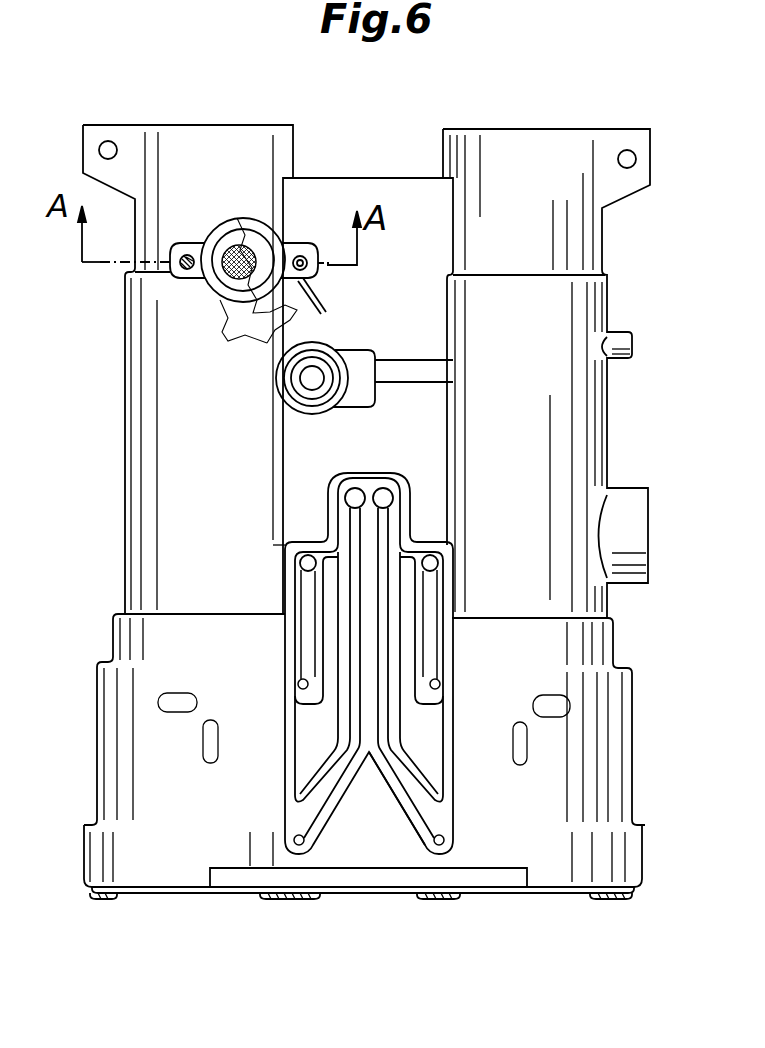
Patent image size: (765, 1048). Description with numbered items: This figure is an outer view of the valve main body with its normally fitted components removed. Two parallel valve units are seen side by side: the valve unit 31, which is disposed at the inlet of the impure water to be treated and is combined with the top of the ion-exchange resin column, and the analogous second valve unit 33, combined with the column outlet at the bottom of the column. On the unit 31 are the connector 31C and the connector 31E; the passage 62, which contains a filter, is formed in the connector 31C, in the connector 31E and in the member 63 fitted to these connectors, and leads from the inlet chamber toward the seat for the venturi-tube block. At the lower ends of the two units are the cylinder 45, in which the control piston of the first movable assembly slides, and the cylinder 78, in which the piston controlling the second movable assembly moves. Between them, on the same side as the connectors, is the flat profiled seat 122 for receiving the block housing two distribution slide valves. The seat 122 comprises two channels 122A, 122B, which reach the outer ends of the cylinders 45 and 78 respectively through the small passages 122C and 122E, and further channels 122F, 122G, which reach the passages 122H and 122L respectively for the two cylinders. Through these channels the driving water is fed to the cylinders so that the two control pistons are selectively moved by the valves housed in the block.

The valve unit 31 is at (125, 433).
The connector 31C is at (222, 222).
The connector 31E is at (278, 400).
The second valve unit 33 is at (607, 412).
The cylinder 45 is at (103, 748).
The passage 62 is at (223, 278).
The member 63 is at (268, 250).
The cylinder 78 is at (632, 690).
The flat profiled seat 122 is at (283, 577).
The channel 122A is at (357, 715).
The channel 122B is at (392, 772).
The small passage 122C is at (297, 846).
The small passage 122E is at (438, 846).
The channel 122F is at (300, 607).
The channel 122G is at (433, 591).
The passage 122H is at (298, 678).
The passage 122L is at (433, 687).